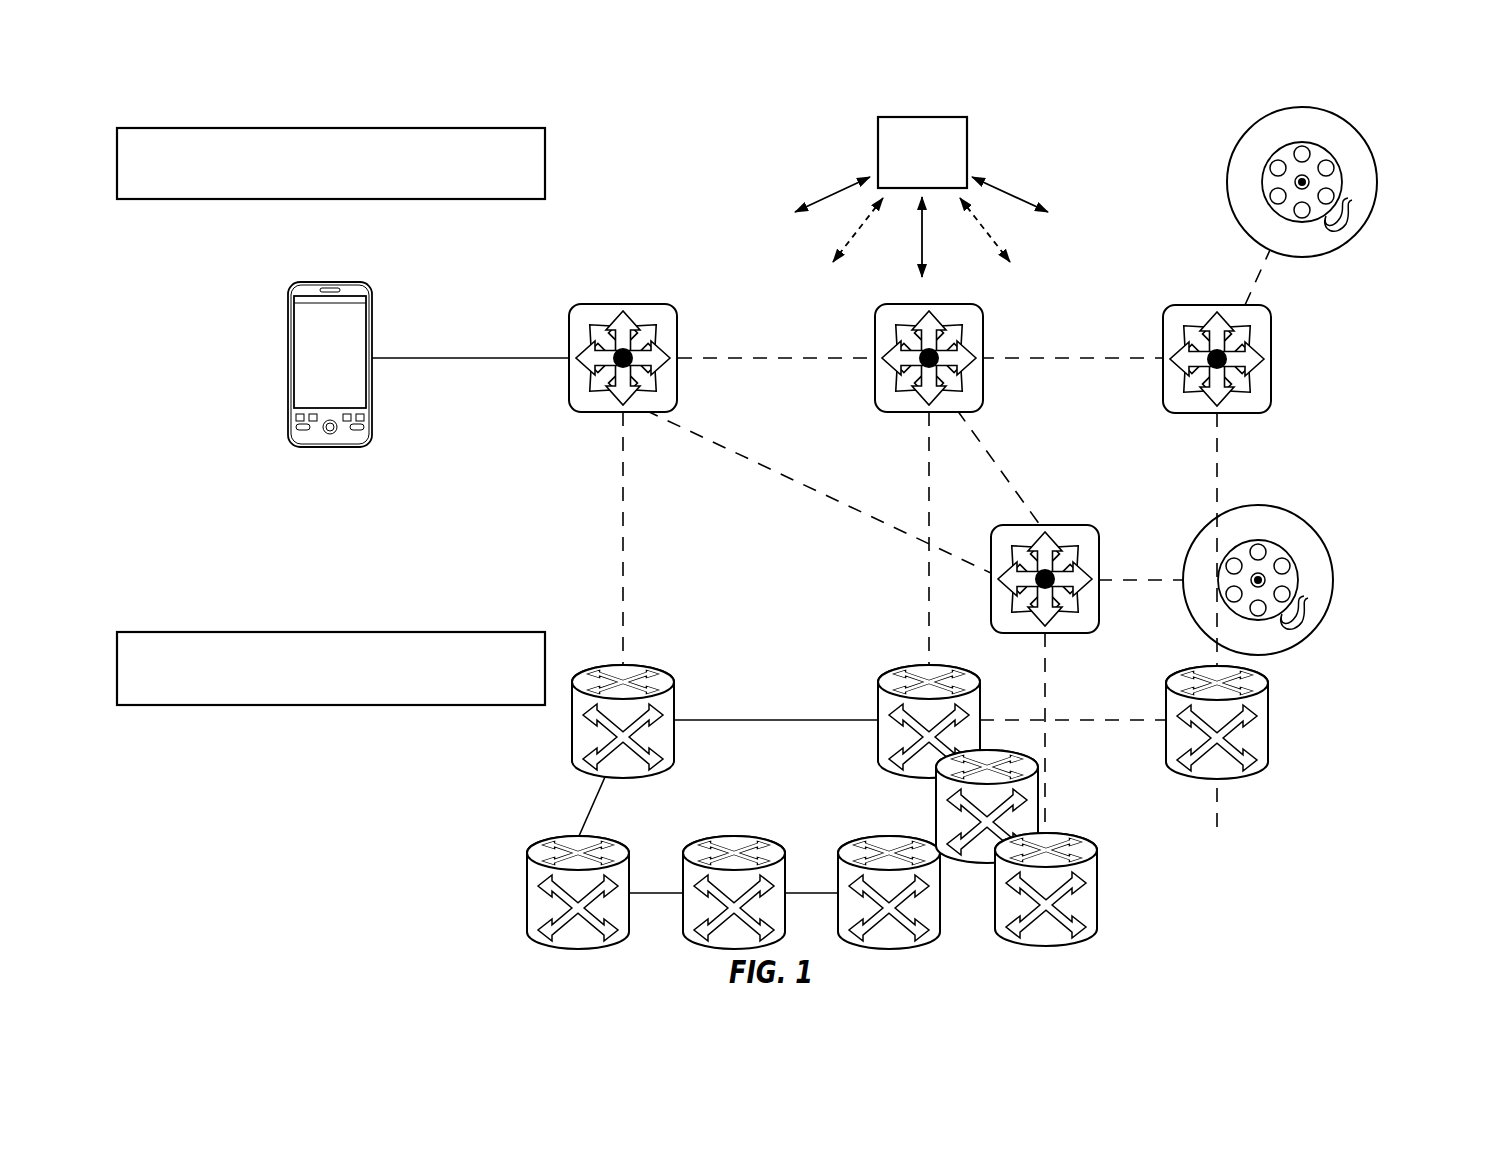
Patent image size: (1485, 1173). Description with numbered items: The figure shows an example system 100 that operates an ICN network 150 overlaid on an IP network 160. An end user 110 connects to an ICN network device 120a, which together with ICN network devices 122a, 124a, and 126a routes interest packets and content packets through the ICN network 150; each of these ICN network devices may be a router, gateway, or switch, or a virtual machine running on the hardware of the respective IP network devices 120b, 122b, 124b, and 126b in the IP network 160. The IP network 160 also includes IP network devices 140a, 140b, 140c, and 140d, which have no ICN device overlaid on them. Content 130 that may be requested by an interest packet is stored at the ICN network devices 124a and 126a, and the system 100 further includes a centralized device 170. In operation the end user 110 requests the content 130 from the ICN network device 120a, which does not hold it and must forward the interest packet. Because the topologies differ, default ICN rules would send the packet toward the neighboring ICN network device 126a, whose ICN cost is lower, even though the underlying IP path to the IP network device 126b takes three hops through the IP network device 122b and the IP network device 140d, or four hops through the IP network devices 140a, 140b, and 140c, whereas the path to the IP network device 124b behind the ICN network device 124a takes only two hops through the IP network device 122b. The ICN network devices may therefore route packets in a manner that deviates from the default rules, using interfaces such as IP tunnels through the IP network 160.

The system 100 is at (183, 903).
The end user 110 is at (372, 330).
The ICN network device 120a is at (617, 305).
The ICN network device 122a is at (923, 305).
The ICN network device 124a is at (1228, 307).
The ICN network device 126a is at (1040, 525).
The IP network device 120b is at (660, 672).
The IP network device 122b is at (966, 672).
The IP network device 124b is at (1181, 670).
The IP network device 126b is at (1078, 836).
The IP network device 140a is at (620, 840).
The IP network device 140b is at (735, 840).
The IP network device 140c is at (892, 838).
The IP network device 140d is at (937, 828).
The content 130 is at (1377, 185).
The ICN network 150 is at (314, 190).
The IP network 160 is at (314, 695).
The centralized device 170 is at (905, 164).